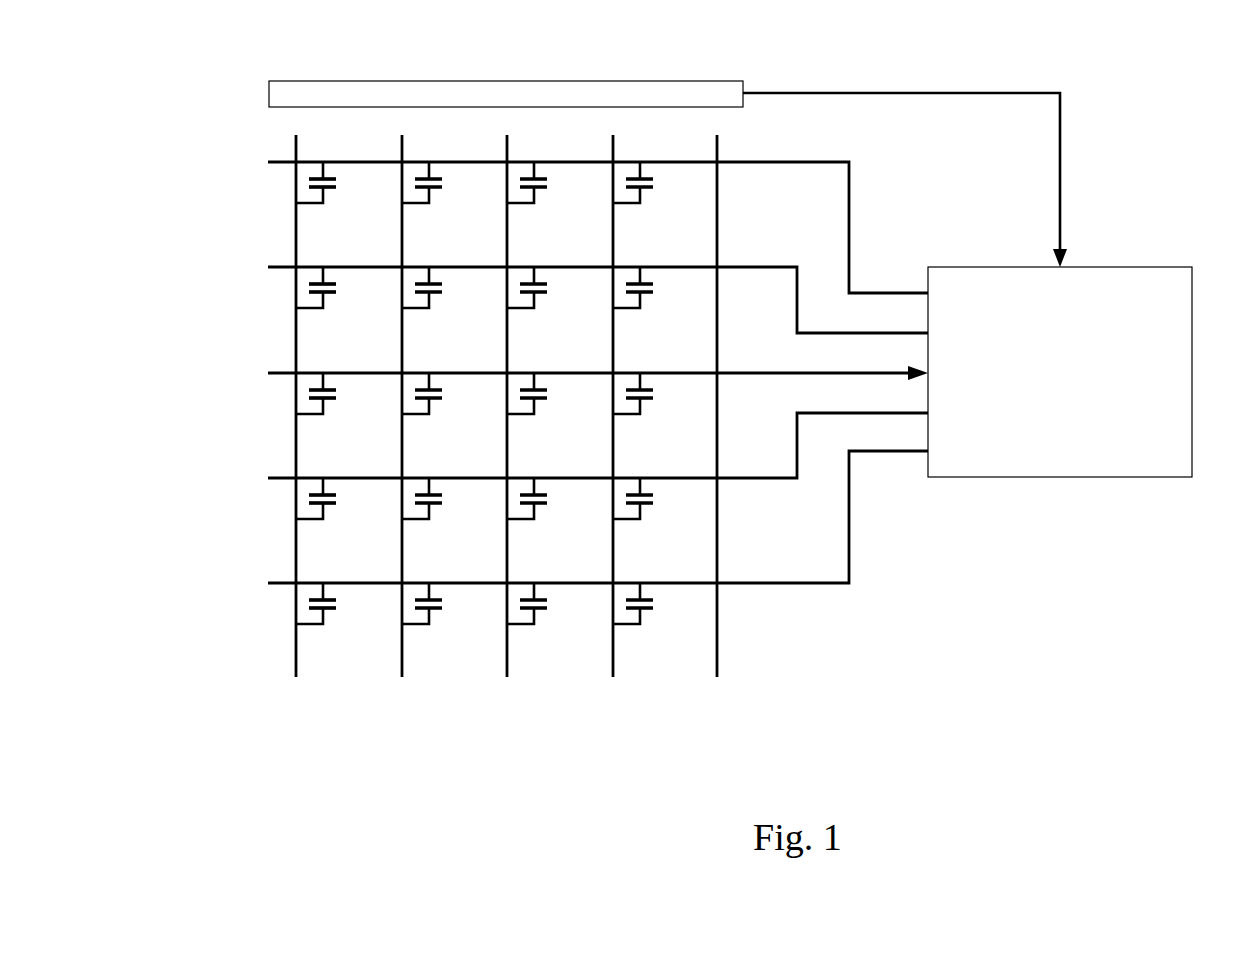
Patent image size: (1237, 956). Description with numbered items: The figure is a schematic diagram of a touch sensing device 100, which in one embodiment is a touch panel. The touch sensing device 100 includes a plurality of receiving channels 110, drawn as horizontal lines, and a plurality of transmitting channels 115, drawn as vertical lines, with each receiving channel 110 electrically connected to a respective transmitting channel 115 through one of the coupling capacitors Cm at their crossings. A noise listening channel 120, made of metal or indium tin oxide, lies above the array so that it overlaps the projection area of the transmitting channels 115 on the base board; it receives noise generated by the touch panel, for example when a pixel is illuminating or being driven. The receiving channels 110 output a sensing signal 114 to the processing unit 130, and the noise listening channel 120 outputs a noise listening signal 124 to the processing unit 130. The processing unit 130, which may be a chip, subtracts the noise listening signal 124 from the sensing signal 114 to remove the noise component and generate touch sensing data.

The touch sensing device 100 is at (1148, 48).
The receiving channels 110 is at (280, 161).
The sensing signal 114 is at (815, 373).
The transmitting channels 115 is at (298, 657).
The noise listening channel 120 is at (648, 81).
The noise listening signal 124 is at (868, 93).
The processing unit 130 is at (1042, 400).